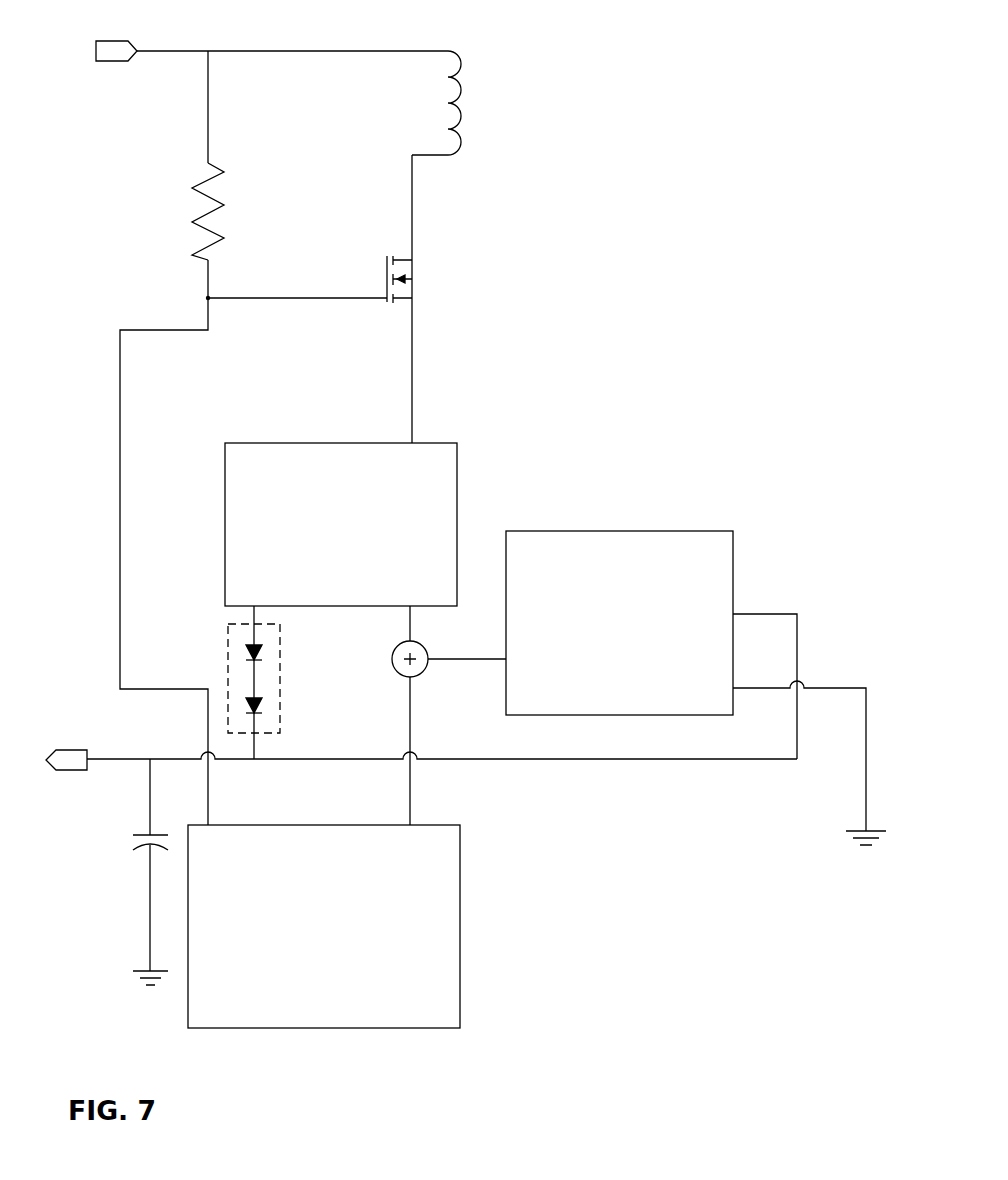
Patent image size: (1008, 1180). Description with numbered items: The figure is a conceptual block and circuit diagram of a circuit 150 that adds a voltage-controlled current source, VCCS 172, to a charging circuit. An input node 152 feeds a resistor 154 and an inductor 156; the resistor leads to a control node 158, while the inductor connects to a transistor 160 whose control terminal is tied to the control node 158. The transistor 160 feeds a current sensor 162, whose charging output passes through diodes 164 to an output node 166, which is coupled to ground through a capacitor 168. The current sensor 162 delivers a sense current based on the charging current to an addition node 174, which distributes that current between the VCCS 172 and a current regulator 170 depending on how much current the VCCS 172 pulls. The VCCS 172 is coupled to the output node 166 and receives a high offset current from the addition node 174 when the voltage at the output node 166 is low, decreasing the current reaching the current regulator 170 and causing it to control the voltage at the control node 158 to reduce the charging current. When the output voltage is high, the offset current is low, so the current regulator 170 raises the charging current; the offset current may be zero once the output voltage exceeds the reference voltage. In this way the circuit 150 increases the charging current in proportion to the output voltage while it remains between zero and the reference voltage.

The circuit 150 is at (705, 231).
The input node 152 is at (116, 40).
The resistor 154 is at (200, 172).
The inductor 156 is at (444, 51).
The control node 158 is at (207, 297).
The transistor 160 is at (401, 258).
The current sensor 162 is at (313, 442).
The diodes 164 is at (282, 667).
The output node 166 is at (68, 749).
The capacitor 168 is at (140, 848).
The current regulator 170 is at (460, 912).
The voltage-controlled current source 172 is at (606, 530).
The addition node 174 is at (424, 673).